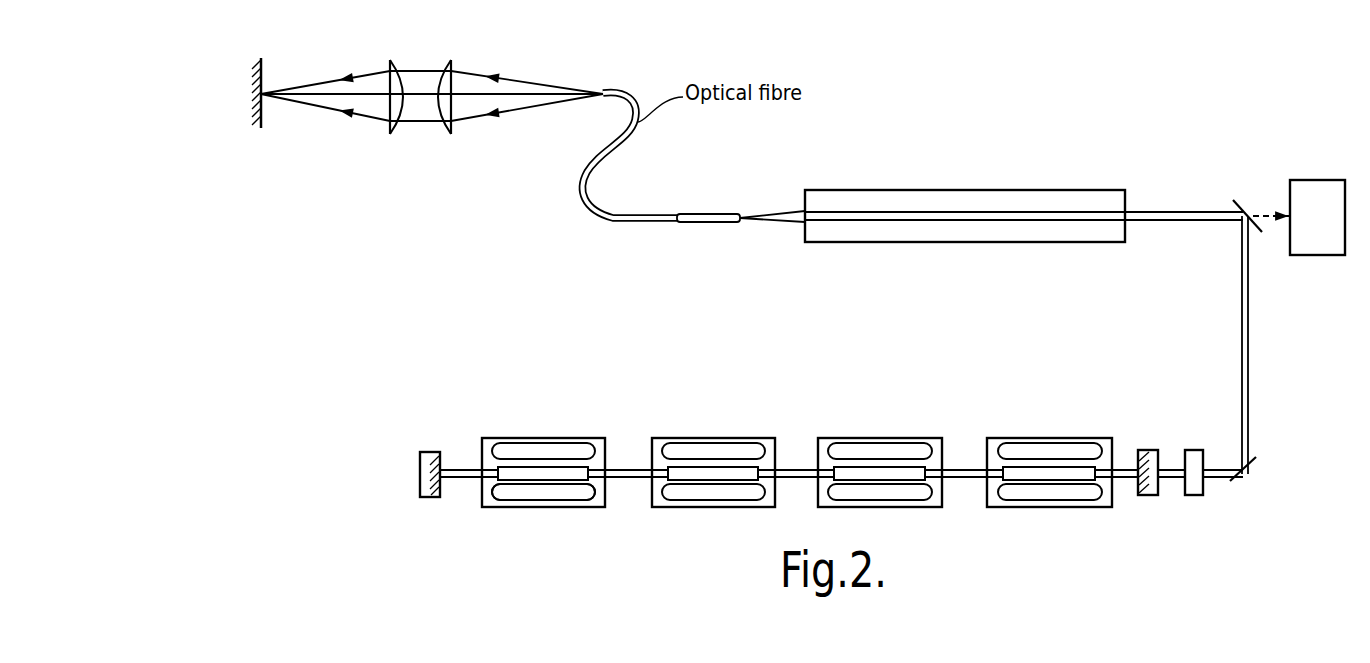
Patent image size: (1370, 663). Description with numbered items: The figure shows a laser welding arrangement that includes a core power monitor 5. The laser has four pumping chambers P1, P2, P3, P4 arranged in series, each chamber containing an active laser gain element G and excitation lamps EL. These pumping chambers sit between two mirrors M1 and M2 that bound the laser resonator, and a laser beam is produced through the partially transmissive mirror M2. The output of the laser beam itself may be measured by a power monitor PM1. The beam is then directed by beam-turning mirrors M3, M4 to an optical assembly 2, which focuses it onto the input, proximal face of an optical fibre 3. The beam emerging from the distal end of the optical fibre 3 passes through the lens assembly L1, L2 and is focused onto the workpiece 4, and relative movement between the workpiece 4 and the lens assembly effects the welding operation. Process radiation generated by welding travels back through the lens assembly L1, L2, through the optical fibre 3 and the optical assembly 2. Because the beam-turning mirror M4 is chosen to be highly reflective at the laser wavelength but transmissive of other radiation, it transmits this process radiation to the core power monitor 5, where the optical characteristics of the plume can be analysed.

The optical assembly 2 is at (988, 190).
The optical fibre 3 is at (703, 228).
The workpiece 4 is at (263, 118).
The core power monitor 5 is at (1312, 185).
The lens L1 is at (451, 60).
The lens L2 is at (390, 60).
The mirror M1 is at (430, 498).
The partially transmissive mirror M2 is at (1148, 497).
The beam-turning mirror M3 is at (1245, 482).
The beam-turning mirror M4 is at (1245, 203).
The pumping chamber P1 is at (543, 473).
The pumping chamber P2 is at (755, 438).
The pumping chamber P3 is at (907, 438).
The pumping chamber P4 is at (1068, 438).
The active laser gain element G is at (540, 475).
The excitation lamps EL is at (578, 493).
The power monitor PM1 is at (1195, 497).